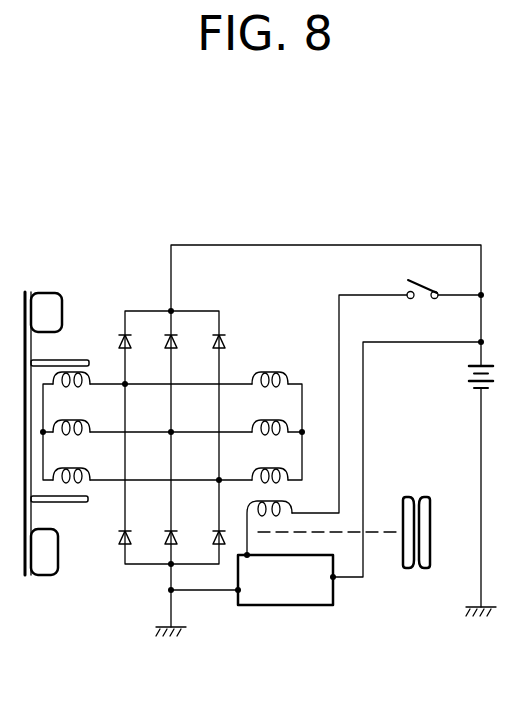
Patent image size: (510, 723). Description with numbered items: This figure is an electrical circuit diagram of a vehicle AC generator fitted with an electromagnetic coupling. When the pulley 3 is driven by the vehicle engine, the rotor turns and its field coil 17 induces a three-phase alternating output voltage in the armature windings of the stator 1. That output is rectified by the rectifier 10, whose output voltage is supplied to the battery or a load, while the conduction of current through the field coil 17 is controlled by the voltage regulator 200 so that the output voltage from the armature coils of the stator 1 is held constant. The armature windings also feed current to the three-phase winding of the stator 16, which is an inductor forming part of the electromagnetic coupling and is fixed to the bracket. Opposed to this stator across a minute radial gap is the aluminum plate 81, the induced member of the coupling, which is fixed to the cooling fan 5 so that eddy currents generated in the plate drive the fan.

The stator 1 is at (272, 378).
The pulley 3 is at (413, 572).
The cooling fan 5 is at (38, 578).
The rectifier 10 is at (149, 347).
The stator 16 is at (80, 450).
The field coil 17 is at (283, 508).
The aluminum plate 81 is at (74, 505).
The voltage regulator 200 is at (283, 608).